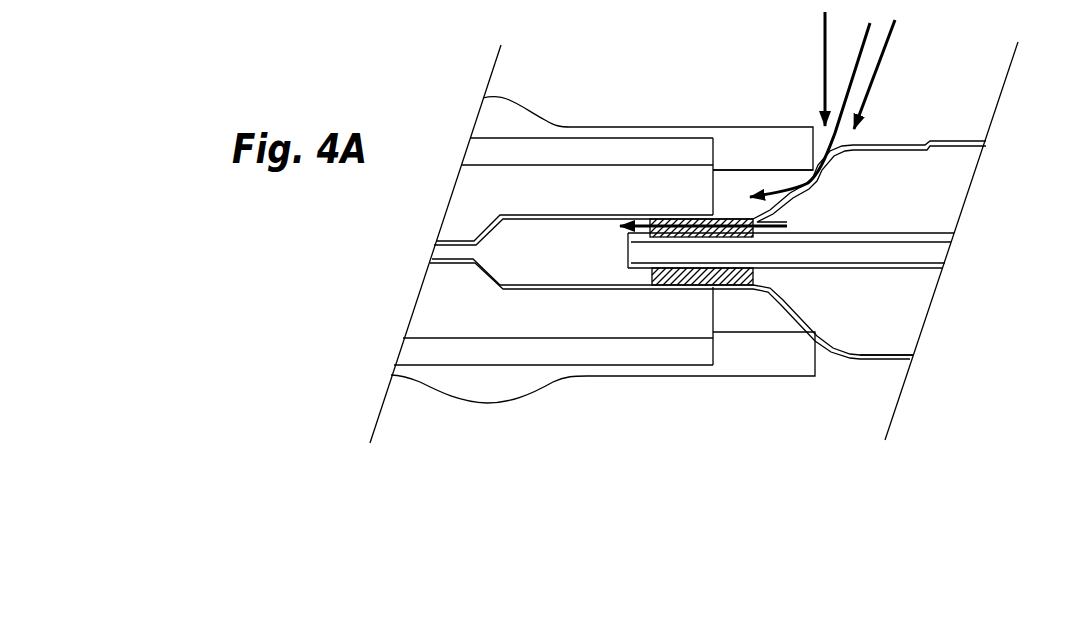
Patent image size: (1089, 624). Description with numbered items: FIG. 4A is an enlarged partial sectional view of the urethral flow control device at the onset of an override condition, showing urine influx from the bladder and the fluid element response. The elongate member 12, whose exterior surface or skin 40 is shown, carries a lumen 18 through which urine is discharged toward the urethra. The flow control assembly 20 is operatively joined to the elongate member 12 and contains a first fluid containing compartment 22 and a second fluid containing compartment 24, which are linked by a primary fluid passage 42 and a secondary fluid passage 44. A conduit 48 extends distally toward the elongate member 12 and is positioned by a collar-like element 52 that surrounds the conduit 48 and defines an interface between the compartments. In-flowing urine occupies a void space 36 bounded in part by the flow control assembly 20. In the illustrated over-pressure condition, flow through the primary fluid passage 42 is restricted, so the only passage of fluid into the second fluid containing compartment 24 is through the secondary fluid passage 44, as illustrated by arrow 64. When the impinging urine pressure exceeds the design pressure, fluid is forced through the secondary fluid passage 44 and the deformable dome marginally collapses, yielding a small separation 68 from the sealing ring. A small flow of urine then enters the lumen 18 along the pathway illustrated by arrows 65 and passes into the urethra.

The elongate member 12 is at (660, 110).
The skin 40 is at (513, 100).
The void space 36 is at (770, 162).
The second fluid containing compartment 24 is at (508, 299).
The lumen 18 is at (680, 338).
The secondary fluid passage 44 is at (652, 218).
The collar-like element 52 is at (712, 288).
The primary fluid passage 42 is at (635, 273).
The arrows 64 is at (788, 220).
The conduit 48 is at (817, 274).
The small separation 68 is at (812, 165).
The arrows 65 is at (876, 79).
The first fluid containing compartment 22 is at (978, 178).
The flow control assembly 20 is at (860, 382).